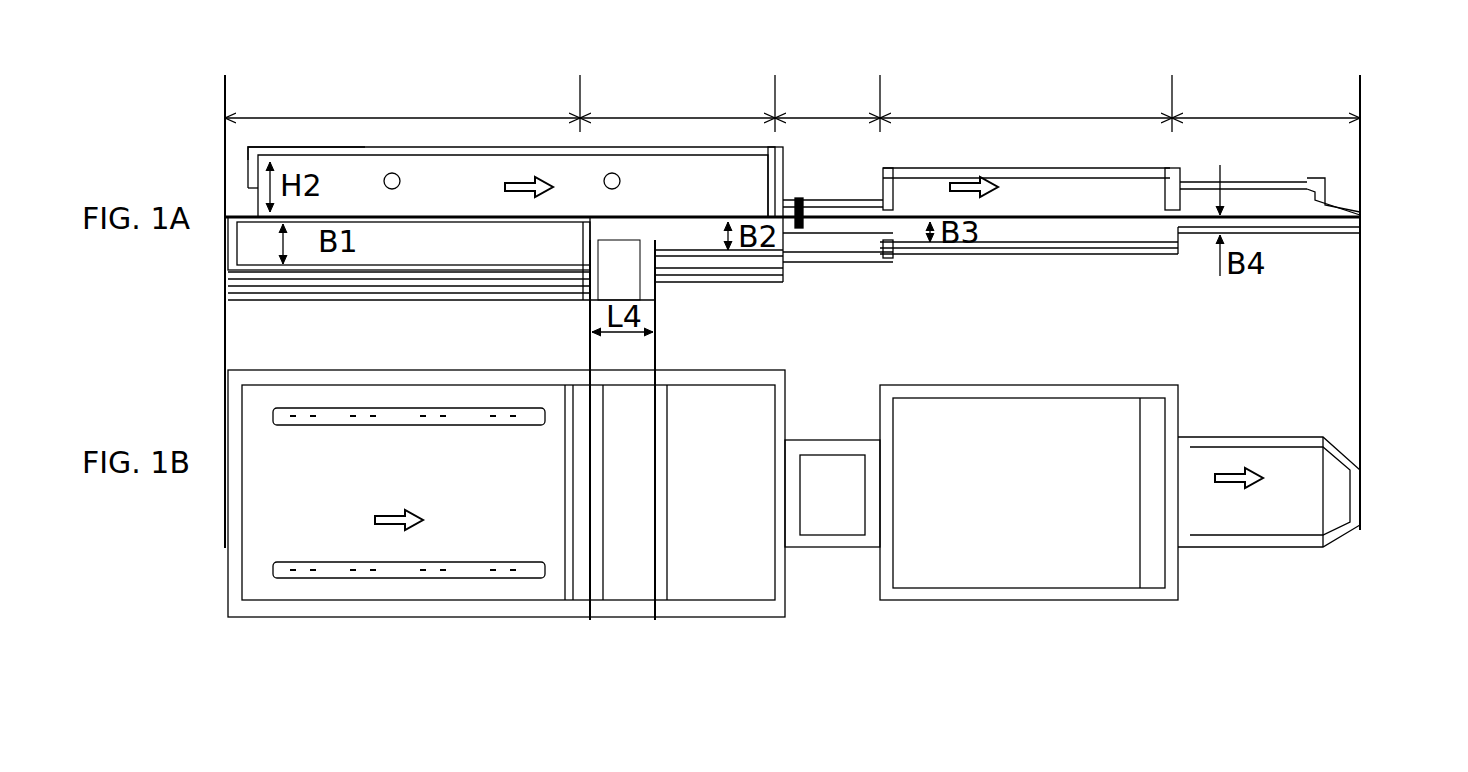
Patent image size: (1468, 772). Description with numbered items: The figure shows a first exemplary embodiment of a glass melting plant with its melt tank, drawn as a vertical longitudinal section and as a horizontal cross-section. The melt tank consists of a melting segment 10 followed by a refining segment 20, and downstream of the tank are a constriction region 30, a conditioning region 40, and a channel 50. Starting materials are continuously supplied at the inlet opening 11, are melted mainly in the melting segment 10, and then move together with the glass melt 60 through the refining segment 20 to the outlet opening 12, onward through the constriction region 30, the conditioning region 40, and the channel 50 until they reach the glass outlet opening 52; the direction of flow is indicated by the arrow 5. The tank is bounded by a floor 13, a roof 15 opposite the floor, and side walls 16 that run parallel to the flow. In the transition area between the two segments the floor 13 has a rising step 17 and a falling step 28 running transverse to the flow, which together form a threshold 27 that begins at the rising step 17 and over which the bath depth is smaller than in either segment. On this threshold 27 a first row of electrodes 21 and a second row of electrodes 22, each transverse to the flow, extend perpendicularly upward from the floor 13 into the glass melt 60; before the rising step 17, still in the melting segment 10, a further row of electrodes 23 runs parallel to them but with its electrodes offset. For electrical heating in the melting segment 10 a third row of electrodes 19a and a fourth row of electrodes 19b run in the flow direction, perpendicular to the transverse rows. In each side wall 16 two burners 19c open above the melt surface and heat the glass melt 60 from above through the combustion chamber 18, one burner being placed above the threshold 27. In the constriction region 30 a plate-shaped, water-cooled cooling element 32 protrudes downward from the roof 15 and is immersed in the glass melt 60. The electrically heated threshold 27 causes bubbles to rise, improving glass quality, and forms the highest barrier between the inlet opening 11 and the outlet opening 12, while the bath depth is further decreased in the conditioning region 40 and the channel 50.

In FIG. 1A, the arrow 5 is at (533, 176).
In FIG. 1B, the arrow 5 is at (390, 510).
In FIG. 1A, the melting segment 10 is at (402, 101).
In FIG. 1A, the inlet opening 11 is at (243, 217).
In FIG. 1A, the outlet opening 12 is at (780, 233).
In FIG. 1A, the floor 13 is at (370, 270).
In FIG. 1A, the roof 15 is at (328, 172).
In FIG. 1A, the side walls 16 is at (300, 370).
In FIG. 1B, the side walls 16 is at (700, 612).
In FIG. 1A, the rising step 17 is at (583, 265).
In FIG. 1B, the rising step 17 is at (593, 475).
In FIG. 1A, the combustion chamber 18 is at (362, 147).
In FIG. 1B, the third row of electrodes 19a is at (393, 578).
In FIG. 1B, the fourth row of electrodes 19b is at (375, 418).
In FIG. 1A, the burners 19c is at (392, 173).
In FIG. 1A, the refining segment 20 is at (677, 101).
In FIG. 1A, the first row of electrodes 21 is at (613, 240).
In FIG. 1B, the first row of electrodes 21 is at (613, 590).
In FIG. 1A, the second row of electrodes 22 is at (640, 237).
In FIG. 1B, the second row of electrodes 22 is at (653, 590).
In FIG. 1A, the further row of electrodes 23 is at (562, 267).
In FIG. 1B, the further row of electrodes 23 is at (575, 565).
In FIG. 1A, the threshold 27 is at (600, 250).
In FIG. 1B, the threshold 27 is at (717, 595).
In FIG. 1B, the falling step 28 is at (667, 480).
In FIG. 1A, the constriction region 30 is at (827, 101).
In FIG. 1B, the constriction region 30 is at (832, 493).
In FIG. 1A, the cooling element 32 is at (803, 218).
In FIG. 1A, the conditioning region 40 is at (1026, 101).
In FIG. 1B, the conditioning region 40 is at (1029, 492).
In FIG. 1A, the channel 50 is at (1266, 101).
In FIG. 1B, the channel 50 is at (1269, 492).
In FIG. 1A, the glass outlet opening 52 is at (1360, 217).
In FIG. 1B, the glass outlet opening 52 is at (1360, 470).
In FIG. 1A, the glass melt 60 is at (665, 215).